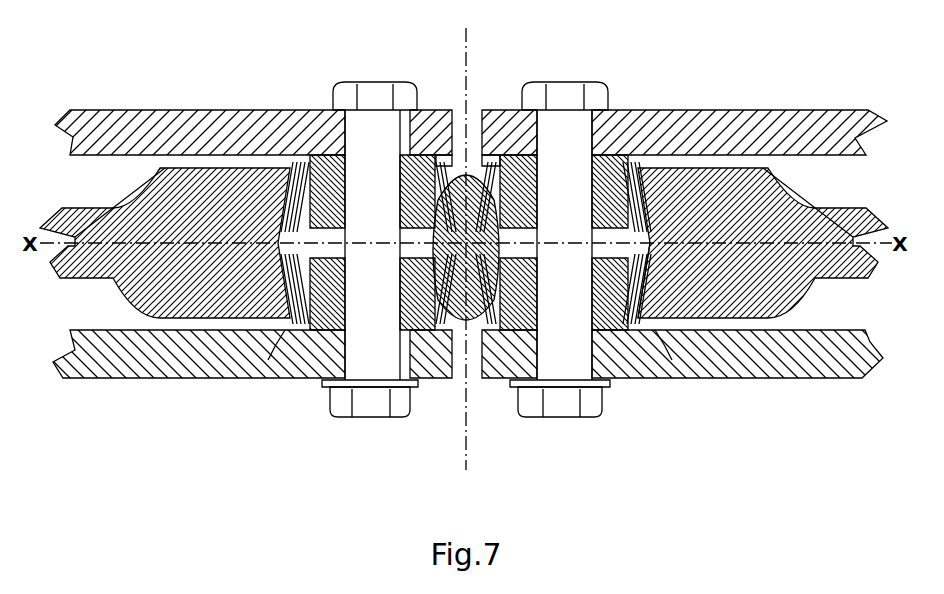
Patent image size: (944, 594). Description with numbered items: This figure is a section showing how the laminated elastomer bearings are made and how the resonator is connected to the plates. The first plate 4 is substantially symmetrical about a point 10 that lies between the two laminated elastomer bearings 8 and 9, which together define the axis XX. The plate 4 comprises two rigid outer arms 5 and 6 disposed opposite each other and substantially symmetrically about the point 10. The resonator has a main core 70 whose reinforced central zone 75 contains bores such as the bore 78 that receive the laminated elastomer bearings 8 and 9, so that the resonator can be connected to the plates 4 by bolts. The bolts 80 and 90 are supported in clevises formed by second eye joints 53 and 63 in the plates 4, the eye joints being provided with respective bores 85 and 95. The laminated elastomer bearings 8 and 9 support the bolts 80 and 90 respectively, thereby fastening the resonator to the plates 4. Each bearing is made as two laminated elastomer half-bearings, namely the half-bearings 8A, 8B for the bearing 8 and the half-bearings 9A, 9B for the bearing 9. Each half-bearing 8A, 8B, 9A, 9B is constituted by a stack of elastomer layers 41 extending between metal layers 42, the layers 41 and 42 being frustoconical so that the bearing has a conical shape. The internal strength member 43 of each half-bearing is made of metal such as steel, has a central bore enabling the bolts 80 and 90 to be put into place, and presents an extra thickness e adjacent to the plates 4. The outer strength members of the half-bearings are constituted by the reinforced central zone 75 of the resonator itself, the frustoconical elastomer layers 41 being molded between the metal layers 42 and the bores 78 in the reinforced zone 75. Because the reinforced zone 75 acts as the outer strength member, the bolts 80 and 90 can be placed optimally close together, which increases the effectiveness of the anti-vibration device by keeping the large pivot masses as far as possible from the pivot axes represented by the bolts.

The first plate 4 is at (126, 108).
The first outer arm 5 is at (146, 108).
The other outer arm 6 is at (845, 108).
The laminated elastomer bearing 8 is at (292, 282).
The laminated elastomer half-bearing 8A is at (302, 165).
The laminated elastomer half-bearing 8B is at (296, 330).
The laminated elastomer bearing 9 is at (636, 282).
The laminated elastomer half-bearing 9A is at (676, 165).
The laminated elastomer half-bearing 9B is at (632, 330).
The point 10 is at (466, 118).
The elastomer layers 41 is at (408, 312).
The metal layers 42 is at (500, 318).
The internal strength member 43 is at (398, 392).
The second eye joint 53 is at (436, 108).
The second eye joint 63 is at (494, 108).
The main core 70 is at (850, 206).
The reinforced central zone 75 is at (752, 166).
The bore 78 is at (252, 378).
The bolt 80 is at (362, 424).
The bore 85 is at (338, 106).
The bolt 90 is at (556, 424).
The bore 95 is at (600, 108).
The extra thickness e is at (640, 152).